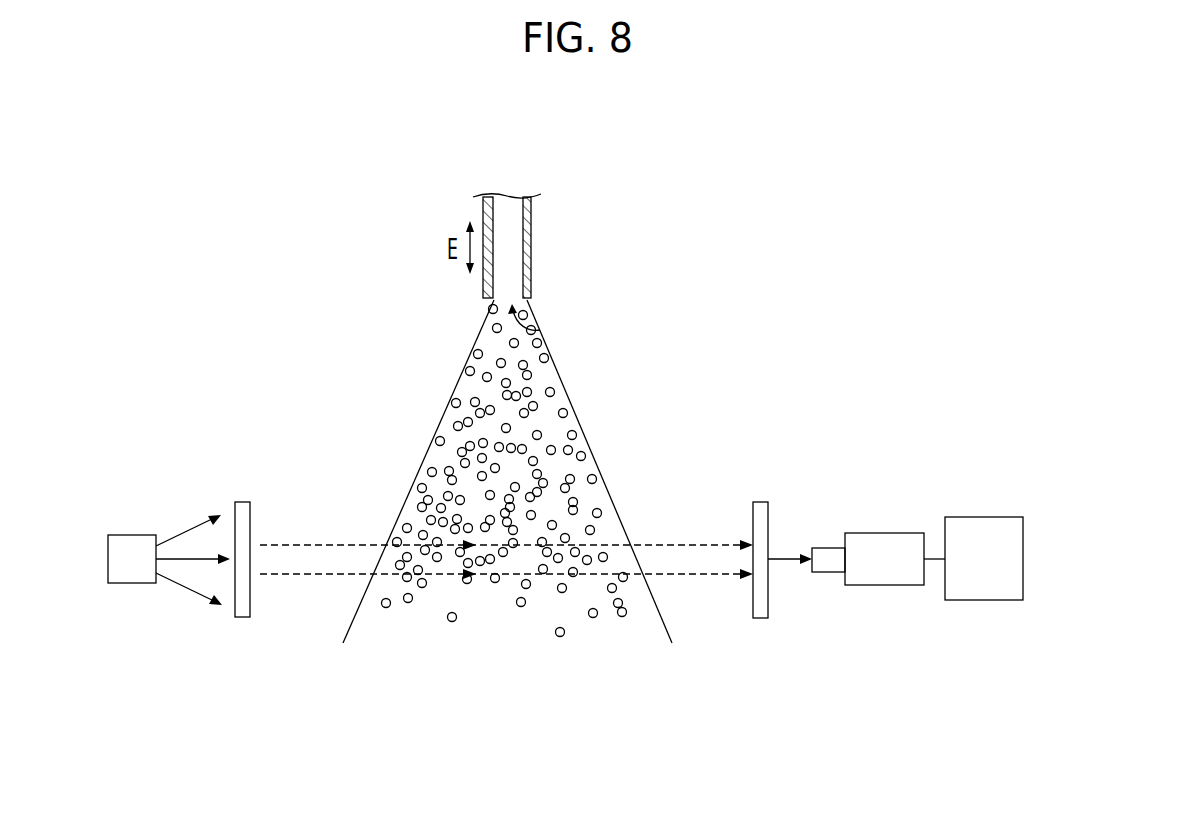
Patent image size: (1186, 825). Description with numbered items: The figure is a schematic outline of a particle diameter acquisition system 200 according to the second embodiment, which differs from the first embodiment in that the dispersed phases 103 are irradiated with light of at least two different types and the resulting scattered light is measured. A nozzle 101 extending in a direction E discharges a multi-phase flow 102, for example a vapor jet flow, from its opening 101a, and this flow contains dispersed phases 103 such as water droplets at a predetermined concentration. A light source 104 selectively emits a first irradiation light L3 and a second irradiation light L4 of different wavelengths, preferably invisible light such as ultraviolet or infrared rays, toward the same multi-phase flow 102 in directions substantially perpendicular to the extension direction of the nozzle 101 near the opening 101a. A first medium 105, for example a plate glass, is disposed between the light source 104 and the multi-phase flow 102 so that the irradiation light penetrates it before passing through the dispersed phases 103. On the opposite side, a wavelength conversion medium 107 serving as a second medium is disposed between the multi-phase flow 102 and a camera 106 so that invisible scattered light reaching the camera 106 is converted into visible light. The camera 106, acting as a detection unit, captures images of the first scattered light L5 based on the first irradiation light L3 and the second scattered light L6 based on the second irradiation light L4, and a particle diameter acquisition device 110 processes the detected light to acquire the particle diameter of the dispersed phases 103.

The particle diameter acquisition system 200 is at (766, 198).
The nozzle 101 is at (512, 258).
The opening 101a is at (540, 330).
The multi-phase flow 102 is at (567, 392).
The dispersed phase 103 is at (595, 530).
The light source 104 is at (132, 565).
The first medium 105 is at (243, 600).
The camera 106 is at (884, 560).
The wavelength conversion medium 107 is at (762, 600).
The particle diameter acquisition device 110 is at (983, 585).
The first irradiation light L3 is at (292, 544).
The second irradiation light L4 is at (300, 578).
The first scattered light L5 is at (705, 543).
The second scattered light L6 is at (678, 578).